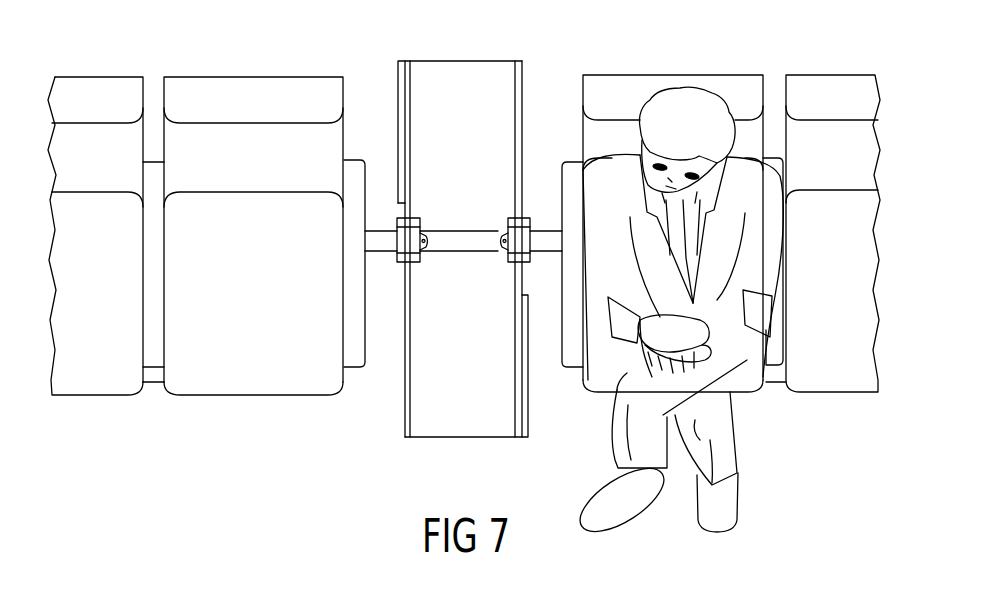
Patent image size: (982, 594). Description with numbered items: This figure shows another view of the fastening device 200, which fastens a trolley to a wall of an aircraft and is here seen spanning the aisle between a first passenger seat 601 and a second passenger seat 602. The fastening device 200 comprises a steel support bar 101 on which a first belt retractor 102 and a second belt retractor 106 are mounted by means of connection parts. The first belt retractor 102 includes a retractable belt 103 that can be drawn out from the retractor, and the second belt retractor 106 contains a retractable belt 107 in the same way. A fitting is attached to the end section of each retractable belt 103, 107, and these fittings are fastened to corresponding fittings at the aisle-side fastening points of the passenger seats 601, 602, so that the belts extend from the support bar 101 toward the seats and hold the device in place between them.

The first passenger seat 601 is at (264, 95).
The second passenger seat 602 is at (633, 95).
The fastening device 200 is at (480, 203).
The support bar 101 is at (447, 238).
The first belt retractor 102 is at (413, 263).
The retractable belt 103 is at (375, 241).
The second belt retractor 106 is at (507, 258).
The retractable belt 107 is at (543, 237).